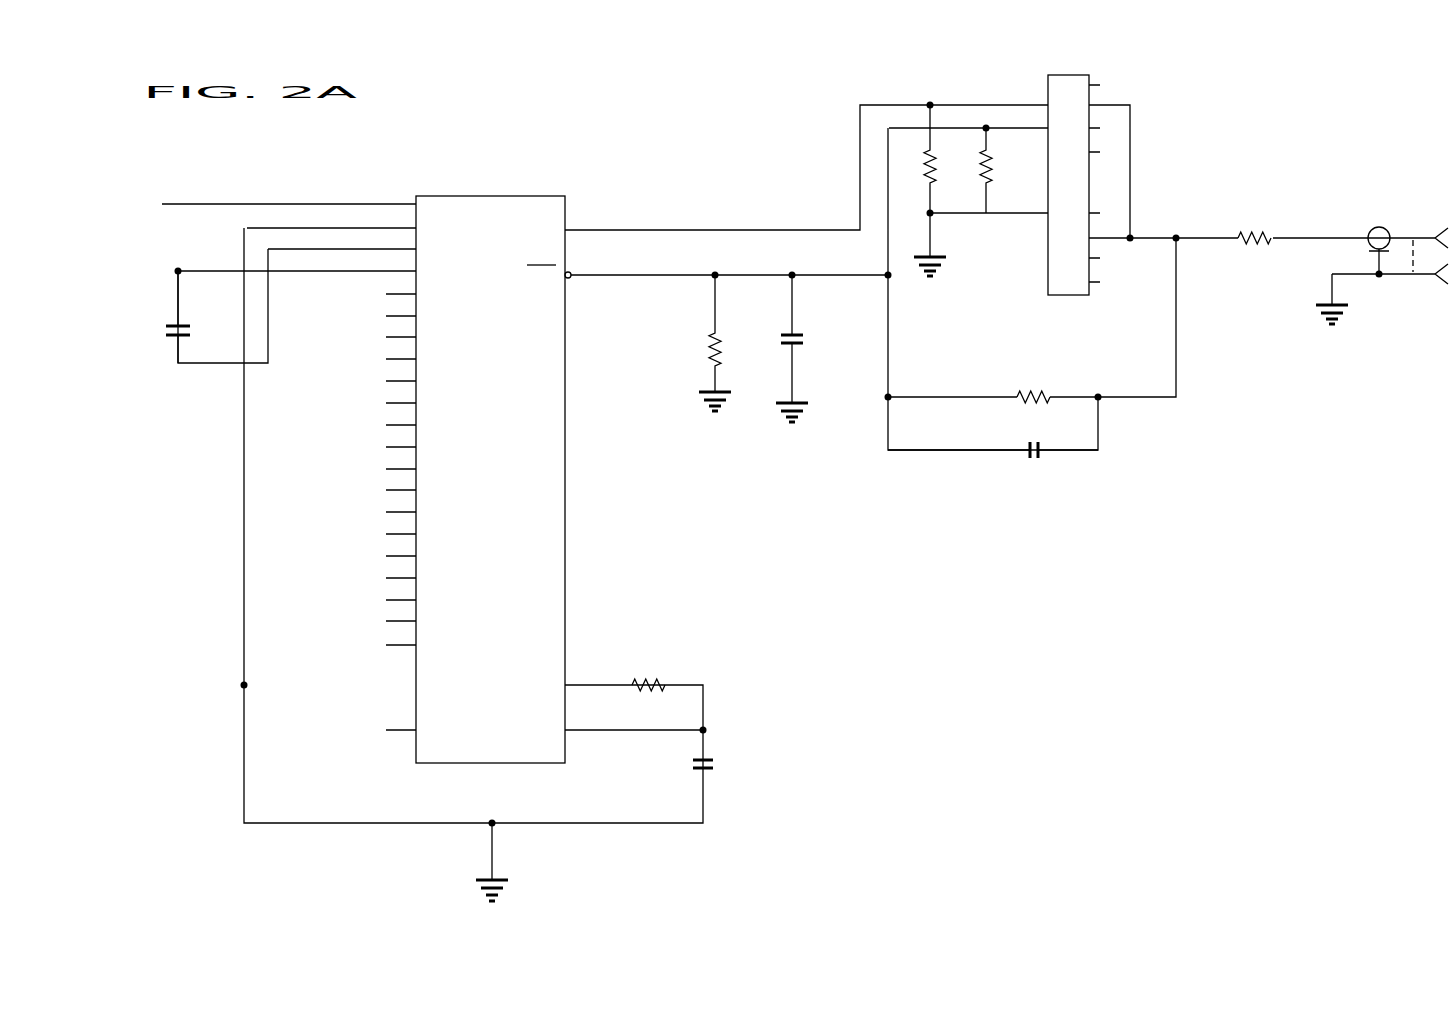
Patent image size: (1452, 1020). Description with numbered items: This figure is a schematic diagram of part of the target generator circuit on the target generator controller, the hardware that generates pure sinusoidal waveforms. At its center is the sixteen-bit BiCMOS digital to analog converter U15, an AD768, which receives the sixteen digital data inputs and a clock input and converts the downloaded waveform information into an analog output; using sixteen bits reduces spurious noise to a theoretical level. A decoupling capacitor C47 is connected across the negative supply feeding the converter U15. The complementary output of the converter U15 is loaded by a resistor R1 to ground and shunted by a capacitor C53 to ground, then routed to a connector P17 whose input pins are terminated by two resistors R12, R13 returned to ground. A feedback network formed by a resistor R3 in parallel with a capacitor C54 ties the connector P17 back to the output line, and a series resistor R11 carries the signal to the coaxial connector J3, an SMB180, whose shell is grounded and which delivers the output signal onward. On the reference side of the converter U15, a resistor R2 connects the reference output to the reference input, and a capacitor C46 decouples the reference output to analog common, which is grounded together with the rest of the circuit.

The AD768 digital-to-analog converter U15 is at (369, 460).
The 0.1UF capacitor C47 is at (172, 317).
The 220 ohm resistor R1 is at (731, 343).
The 68pf capacitor C53 is at (810, 348).
The 100 ohm resistor R12 is at (944, 190).
The 100 ohm resistor R13 is at (989, 170).
The connector P17(A,B) P17 is at (1078, 173).
The 47 ohm resistor R11 is at (1249, 218).
The SMB180 connector J3 is at (1382, 256).
The 220 ohm resistor R3 is at (1026, 378).
The 68pf capacitor C54 is at (993, 455).
The 1K resistor R2 is at (639, 670).
The 0.1UF capacitor C46 is at (729, 766).